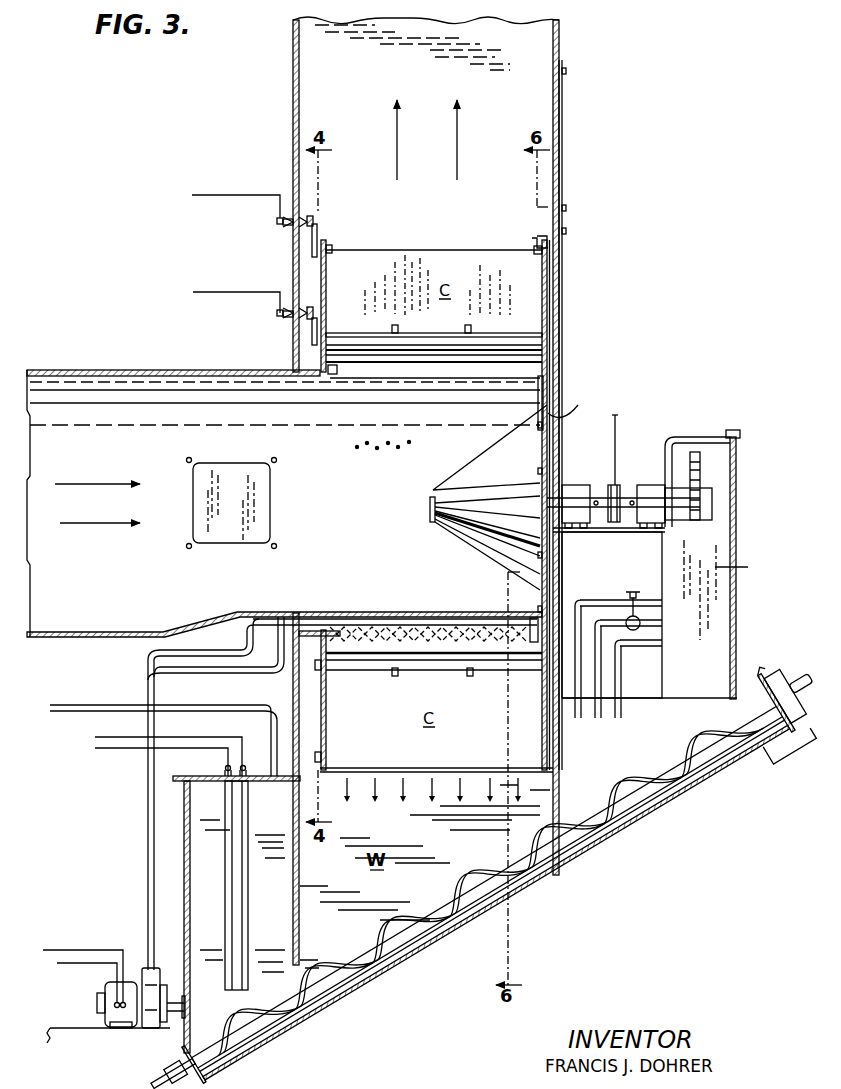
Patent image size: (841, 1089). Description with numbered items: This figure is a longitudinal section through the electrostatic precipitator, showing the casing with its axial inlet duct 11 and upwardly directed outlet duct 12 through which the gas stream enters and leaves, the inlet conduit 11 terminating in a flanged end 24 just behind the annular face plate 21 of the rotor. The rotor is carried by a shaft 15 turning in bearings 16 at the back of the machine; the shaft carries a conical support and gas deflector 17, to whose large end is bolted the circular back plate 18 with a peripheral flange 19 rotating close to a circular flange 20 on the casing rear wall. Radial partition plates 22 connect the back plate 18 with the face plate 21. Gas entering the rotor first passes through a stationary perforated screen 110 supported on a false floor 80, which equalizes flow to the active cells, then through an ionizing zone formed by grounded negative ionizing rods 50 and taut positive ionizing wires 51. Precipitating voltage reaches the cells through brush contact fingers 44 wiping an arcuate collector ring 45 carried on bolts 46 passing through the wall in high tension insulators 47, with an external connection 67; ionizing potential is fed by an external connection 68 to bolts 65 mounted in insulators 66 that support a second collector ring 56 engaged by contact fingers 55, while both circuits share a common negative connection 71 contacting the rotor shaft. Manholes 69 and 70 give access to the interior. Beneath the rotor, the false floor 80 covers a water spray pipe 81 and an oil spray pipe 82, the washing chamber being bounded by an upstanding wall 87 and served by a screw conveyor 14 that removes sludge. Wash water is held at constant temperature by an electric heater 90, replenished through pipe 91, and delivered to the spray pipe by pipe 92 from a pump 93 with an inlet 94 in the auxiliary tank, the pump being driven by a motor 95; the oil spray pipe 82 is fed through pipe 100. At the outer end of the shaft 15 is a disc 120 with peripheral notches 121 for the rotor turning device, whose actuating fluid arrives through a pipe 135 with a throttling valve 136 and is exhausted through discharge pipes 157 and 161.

The axial inlet duct 11 is at (100, 370).
The radial outlet duct 12 is at (293, 64).
The screw conveyor 14 is at (390, 967).
The shaft 15 is at (604, 485).
The bearings 16 is at (572, 484).
The conical support and gas deflector 17 is at (480, 464).
The circular back plate 18 is at (546, 326).
The peripheral flange 19 is at (542, 251).
The circular flange 20 is at (536, 236).
The annular face plate 21 is at (326, 275).
The radial partition plates 22 is at (514, 372).
The flanged end 24 is at (336, 376).
The brush contact finger 44 is at (312, 242).
The collector ring 45 is at (313, 218).
The bolts 46 is at (277, 222).
The high tension insulators 47 is at (287, 225).
The negative ionizing rods 50 is at (422, 350).
The positive ionizing wires 51 is at (509, 347).
The brush contact finger 55 is at (312, 338).
The second collector ring 56 is at (318, 306).
The bolts 65 is at (277, 314).
The insulators 66 is at (292, 321).
The external electrical connection 67 is at (194, 195).
The external connection 68 is at (193, 292).
The manhole 69 is at (235, 463).
The manhole 70 is at (562, 104).
The common negative connection 71 is at (615, 425).
The false floor 80 is at (480, 618).
The water spray pipe 81 is at (440, 625).
The oil spray pipe 82 is at (398, 614).
The upstanding wall 87 is at (478, 861).
The electric heater 90 is at (246, 894).
The pipe 91 is at (225, 713).
The pipe 92 is at (148, 862).
The pump 93 is at (162, 974).
The inlet 94 is at (185, 1007).
The motor 95 is at (102, 989).
The pipe 100 is at (242, 679).
The stationary screen 110 is at (452, 382).
The disc 120 is at (700, 437).
The peripheral notches 121 is at (700, 480).
The pipe 135 is at (636, 590).
The throttling valve 136 is at (636, 589).
The discharge pipe 157 is at (578, 598).
The discharge pipe 161 is at (646, 652).